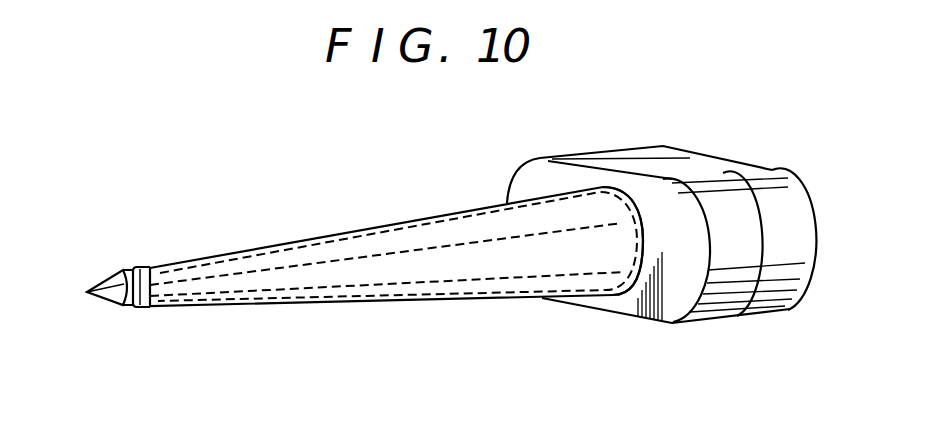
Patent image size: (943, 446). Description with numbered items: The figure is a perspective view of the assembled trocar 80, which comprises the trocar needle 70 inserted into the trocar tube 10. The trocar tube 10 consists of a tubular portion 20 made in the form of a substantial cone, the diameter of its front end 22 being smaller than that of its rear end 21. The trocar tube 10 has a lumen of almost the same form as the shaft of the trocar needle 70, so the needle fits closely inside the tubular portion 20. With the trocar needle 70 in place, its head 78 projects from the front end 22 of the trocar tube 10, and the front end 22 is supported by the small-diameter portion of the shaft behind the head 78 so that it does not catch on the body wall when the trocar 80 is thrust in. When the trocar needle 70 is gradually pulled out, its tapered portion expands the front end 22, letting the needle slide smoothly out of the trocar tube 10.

The trocar tube 10 is at (366, 226).
The tubular portion 20 is at (402, 300).
The rear end 21 is at (633, 300).
The front end 22 is at (142, 268).
The head 78 is at (126, 312).
The trocar 80 is at (736, 144).
The trocar needle 70 is at (800, 173).